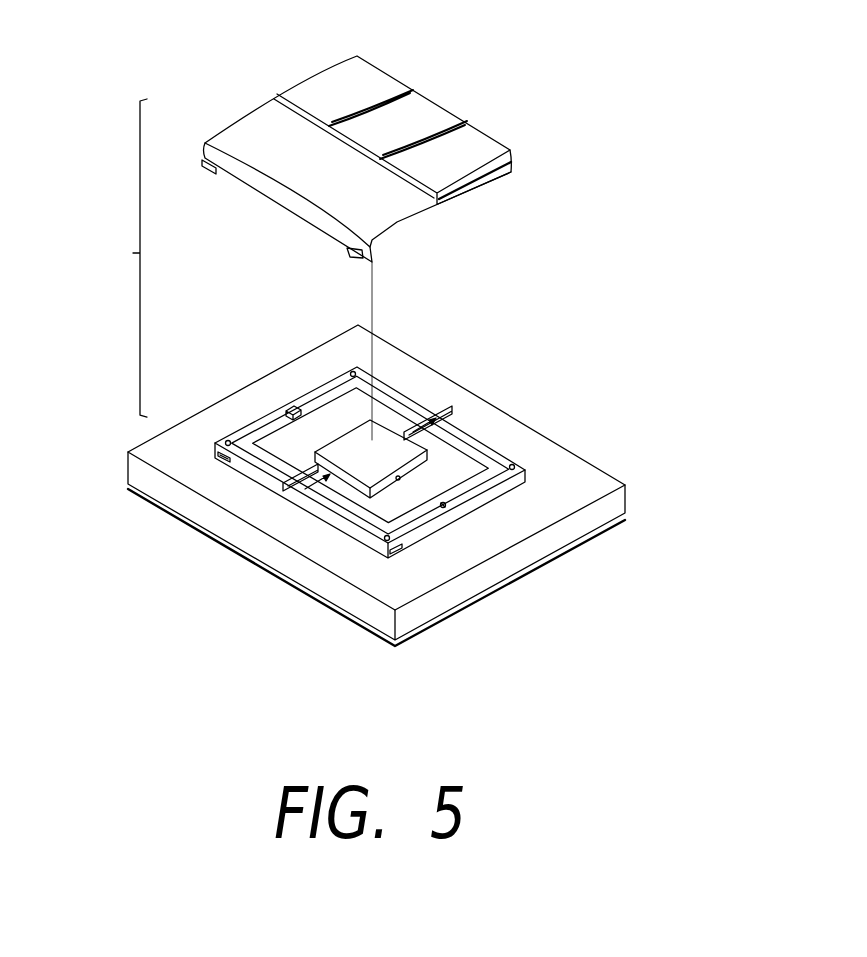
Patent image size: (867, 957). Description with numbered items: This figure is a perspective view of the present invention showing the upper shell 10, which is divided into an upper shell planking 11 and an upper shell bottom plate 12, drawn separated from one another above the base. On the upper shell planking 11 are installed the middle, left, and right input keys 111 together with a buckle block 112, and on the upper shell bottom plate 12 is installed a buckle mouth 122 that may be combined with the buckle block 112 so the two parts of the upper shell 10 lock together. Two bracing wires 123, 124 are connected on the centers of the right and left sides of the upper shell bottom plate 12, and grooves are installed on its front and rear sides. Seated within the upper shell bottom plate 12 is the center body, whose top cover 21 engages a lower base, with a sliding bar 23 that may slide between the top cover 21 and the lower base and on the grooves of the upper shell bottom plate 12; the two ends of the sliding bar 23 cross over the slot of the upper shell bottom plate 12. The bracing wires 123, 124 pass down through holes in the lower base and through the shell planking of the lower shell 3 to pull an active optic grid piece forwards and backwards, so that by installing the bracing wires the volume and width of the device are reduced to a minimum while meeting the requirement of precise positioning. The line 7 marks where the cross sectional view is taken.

The upper shell 10 is at (113, 258).
The upper shell planking 11 is at (267, 127).
The input keys 111 is at (370, 77).
The buckle block 112 is at (205, 173).
The upper shell bottom plate 12 is at (503, 487).
The buckle mouth 122 is at (217, 457).
The bracing wire 123 is at (317, 418).
The bracing wire 124 is at (446, 502).
The top cover 21 is at (398, 475).
The sliding bar 23 is at (292, 478).
The base plate 3 is at (343, 565).
The section line 7- 7 is at (446, 398).